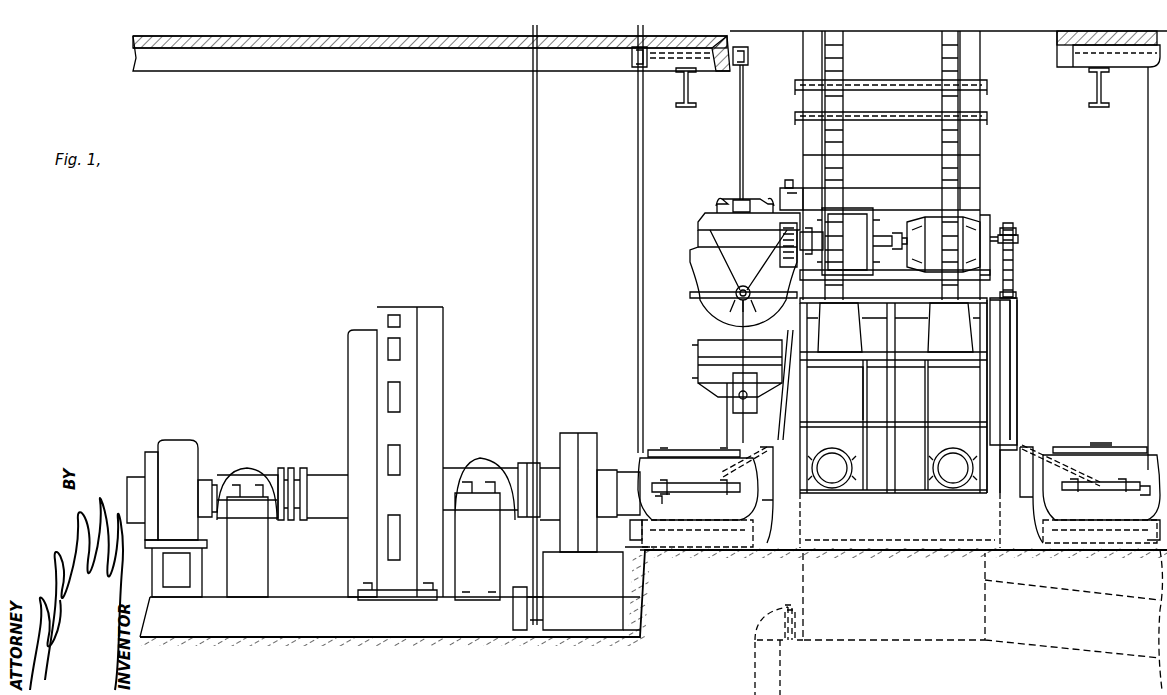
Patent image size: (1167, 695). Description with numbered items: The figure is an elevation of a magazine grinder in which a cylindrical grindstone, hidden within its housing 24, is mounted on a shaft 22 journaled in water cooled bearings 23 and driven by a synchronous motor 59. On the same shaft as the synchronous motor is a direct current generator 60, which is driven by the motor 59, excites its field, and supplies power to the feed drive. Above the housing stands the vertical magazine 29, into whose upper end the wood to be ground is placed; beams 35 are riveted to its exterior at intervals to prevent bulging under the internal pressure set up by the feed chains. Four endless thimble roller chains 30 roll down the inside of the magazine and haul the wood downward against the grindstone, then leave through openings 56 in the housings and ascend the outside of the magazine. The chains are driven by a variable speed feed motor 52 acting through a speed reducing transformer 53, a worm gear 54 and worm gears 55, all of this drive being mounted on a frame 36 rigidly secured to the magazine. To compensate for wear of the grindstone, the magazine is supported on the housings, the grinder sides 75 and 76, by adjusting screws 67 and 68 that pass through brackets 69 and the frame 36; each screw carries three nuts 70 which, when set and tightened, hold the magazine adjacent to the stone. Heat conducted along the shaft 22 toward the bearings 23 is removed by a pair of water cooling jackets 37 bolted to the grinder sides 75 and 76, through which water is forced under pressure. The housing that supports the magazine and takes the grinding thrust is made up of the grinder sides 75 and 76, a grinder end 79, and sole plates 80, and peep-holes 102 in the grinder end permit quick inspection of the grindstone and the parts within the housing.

The shaft 22 is at (620, 458).
The water cooled bearings 23 is at (650, 456).
The housing 24 is at (1018, 311).
The vertical magazine 29 is at (984, 156).
The endless thimble roller chains 30 is at (940, 142).
The beams 35 is at (988, 87).
The frame 36 is at (704, 225).
The water cooling jackets 37 is at (766, 447).
The variable speed feed motor 52 is at (940, 222).
The speed reducing transformer 53 is at (848, 225).
The worm gear 54 is at (700, 280).
The worm gears 55 is at (698, 383).
The openings 56 is at (895, 327).
The synchronous motor 59 is at (416, 306).
The direct current generator 60 is at (175, 442).
The adjusting screw 67 is at (788, 181).
The adjusting screw 68 is at (1012, 228).
The brackets 69 is at (1018, 239).
The nuts 70 is at (1017, 231).
The grinder side 75 is at (778, 427).
The grinder side 76 is at (1018, 405).
The grinder end 79 is at (966, 375).
The sole plates 80 is at (1108, 550).
The peep-holes 102 is at (933, 471).